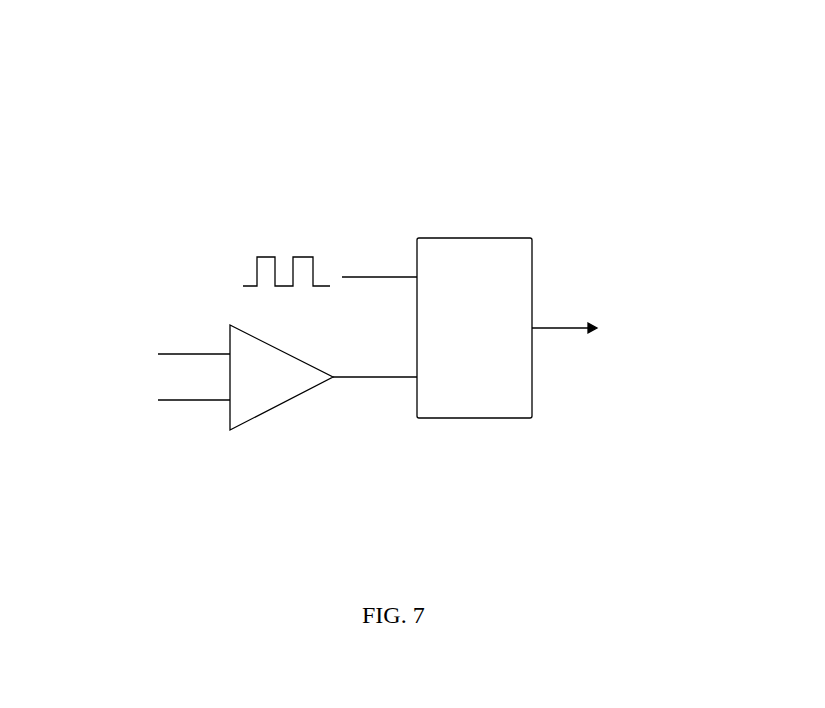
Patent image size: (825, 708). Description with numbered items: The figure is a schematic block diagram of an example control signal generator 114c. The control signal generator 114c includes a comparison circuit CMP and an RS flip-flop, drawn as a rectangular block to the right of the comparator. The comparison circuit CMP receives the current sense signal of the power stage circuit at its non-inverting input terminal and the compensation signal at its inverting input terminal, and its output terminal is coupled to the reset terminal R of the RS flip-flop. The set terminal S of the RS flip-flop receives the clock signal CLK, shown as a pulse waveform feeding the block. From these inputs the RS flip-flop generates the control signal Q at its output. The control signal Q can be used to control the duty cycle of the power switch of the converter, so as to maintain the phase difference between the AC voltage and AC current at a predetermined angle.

The control signal generator 114c is at (453, 231).
The clock signal CLK is at (286, 253).
The comparison circuit CMP is at (229, 377).
The set terminal S is at (437, 328).
The reset terminal R is at (386, 381).
The control signal Q is at (565, 329).